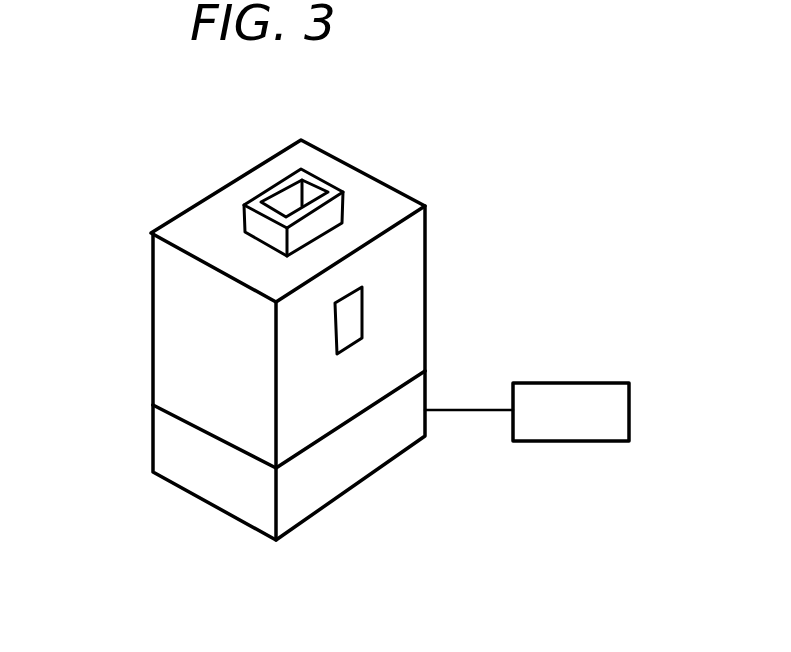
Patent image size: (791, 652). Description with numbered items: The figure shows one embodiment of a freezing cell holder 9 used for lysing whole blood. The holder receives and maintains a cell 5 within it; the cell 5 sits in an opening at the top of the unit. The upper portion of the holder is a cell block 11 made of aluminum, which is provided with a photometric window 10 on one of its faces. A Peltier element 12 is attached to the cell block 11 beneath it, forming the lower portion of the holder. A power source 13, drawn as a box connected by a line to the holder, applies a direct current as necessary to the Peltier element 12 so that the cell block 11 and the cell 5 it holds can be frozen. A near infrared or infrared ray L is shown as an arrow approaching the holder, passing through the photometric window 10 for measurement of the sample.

The cell 5 is at (322, 173).
The freezing cell holder 9 is at (466, 268).
The photometric window 10 is at (352, 330).
The cell block 11 is at (427, 307).
The Peltier element 12 is at (390, 448).
The power source 13 is at (588, 381).
The near infrared or infrared ray L is at (148, 220).